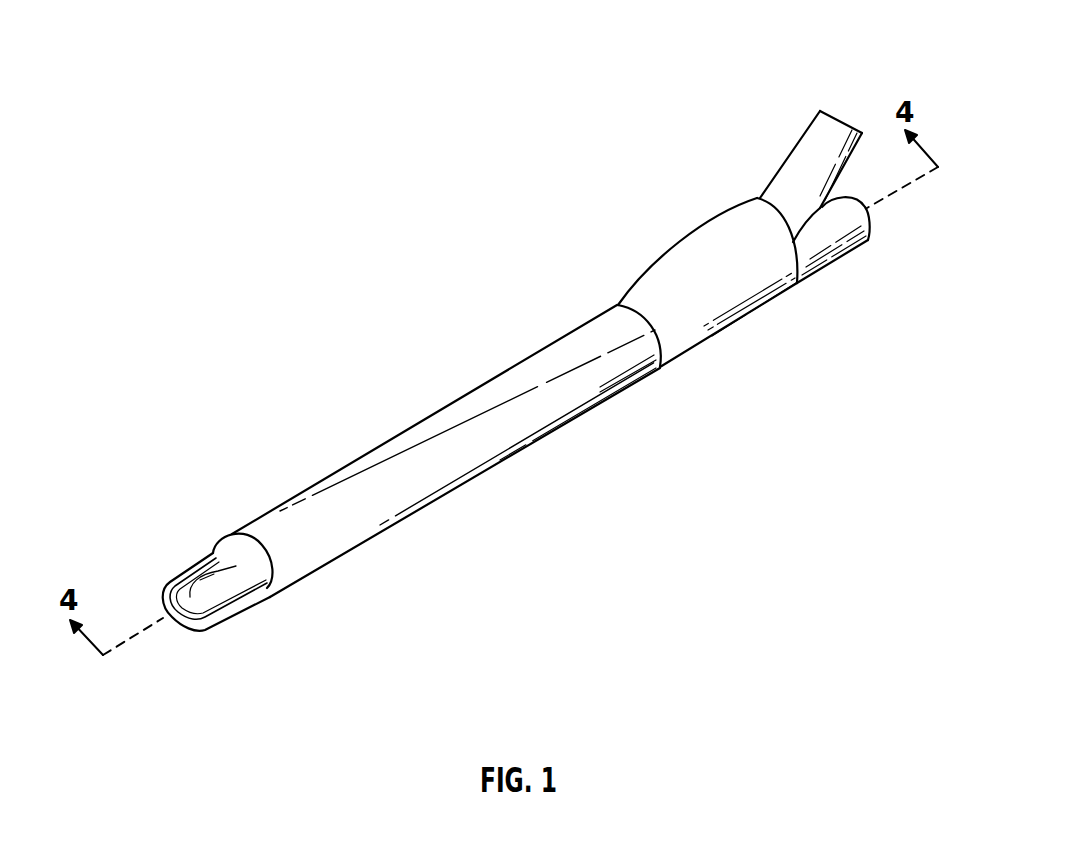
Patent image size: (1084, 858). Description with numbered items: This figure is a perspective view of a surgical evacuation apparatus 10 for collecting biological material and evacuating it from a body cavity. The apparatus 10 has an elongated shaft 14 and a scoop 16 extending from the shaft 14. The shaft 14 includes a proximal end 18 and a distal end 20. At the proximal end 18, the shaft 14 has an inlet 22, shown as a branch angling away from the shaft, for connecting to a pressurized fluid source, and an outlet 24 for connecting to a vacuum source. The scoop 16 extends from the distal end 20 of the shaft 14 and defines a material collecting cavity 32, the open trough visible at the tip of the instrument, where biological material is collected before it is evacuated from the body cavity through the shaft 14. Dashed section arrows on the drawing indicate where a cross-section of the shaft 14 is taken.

The surgical evacuation apparatus 10 is at (213, 155).
The shaft 14 is at (413, 424).
The scoop 16 is at (250, 607).
The proximal end 18 is at (780, 293).
The distal end 20 is at (212, 549).
The inlet 22 is at (823, 110).
The outlet 24 is at (873, 218).
The material collecting cavity 32 is at (170, 582).